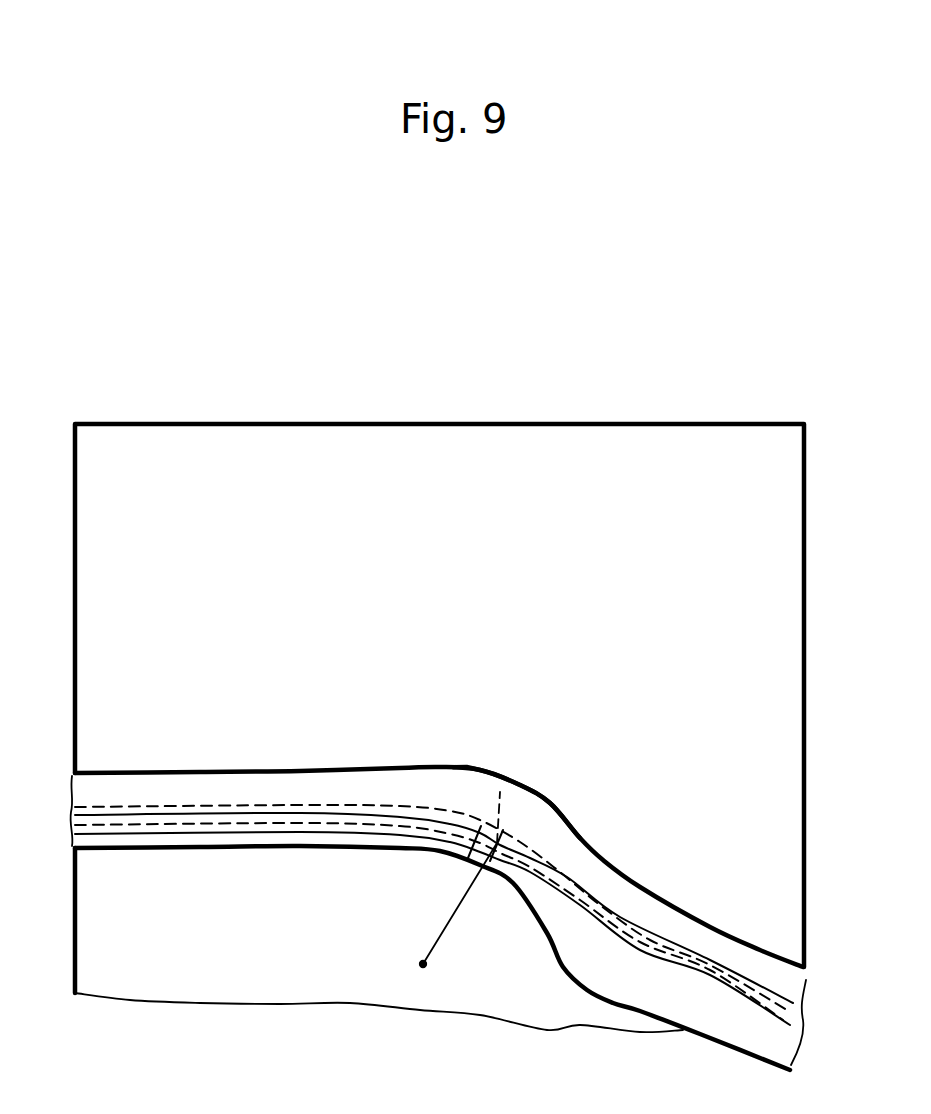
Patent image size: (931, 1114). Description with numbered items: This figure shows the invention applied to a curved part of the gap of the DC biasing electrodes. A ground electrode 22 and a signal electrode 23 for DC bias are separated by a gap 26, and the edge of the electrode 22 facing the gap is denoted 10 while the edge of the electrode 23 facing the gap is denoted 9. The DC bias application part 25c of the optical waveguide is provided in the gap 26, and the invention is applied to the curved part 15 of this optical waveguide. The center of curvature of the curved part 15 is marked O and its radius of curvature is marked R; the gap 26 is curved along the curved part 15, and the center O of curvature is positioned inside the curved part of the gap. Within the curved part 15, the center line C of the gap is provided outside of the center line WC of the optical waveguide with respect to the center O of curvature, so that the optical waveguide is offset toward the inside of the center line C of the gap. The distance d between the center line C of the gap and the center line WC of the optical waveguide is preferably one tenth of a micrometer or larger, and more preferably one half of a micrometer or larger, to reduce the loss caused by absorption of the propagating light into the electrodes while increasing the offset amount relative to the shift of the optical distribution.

The ground electrode 22 is at (447, 455).
The signal electrode 23 is at (346, 933).
The DC bias application part 25c is at (320, 813).
The curved part 15 is at (463, 830).
The gap 26 is at (497, 763).
The edge of electrode 10 is at (533, 793).
The edge of electrode 9 is at (517, 893).
The center line of the gap C is at (192, 805).
The center line of the optical waveguide WC is at (250, 823).
The radius of curvature R is at (461, 878).
The center of curvature O is at (410, 972).
The distance d is at (484, 827).